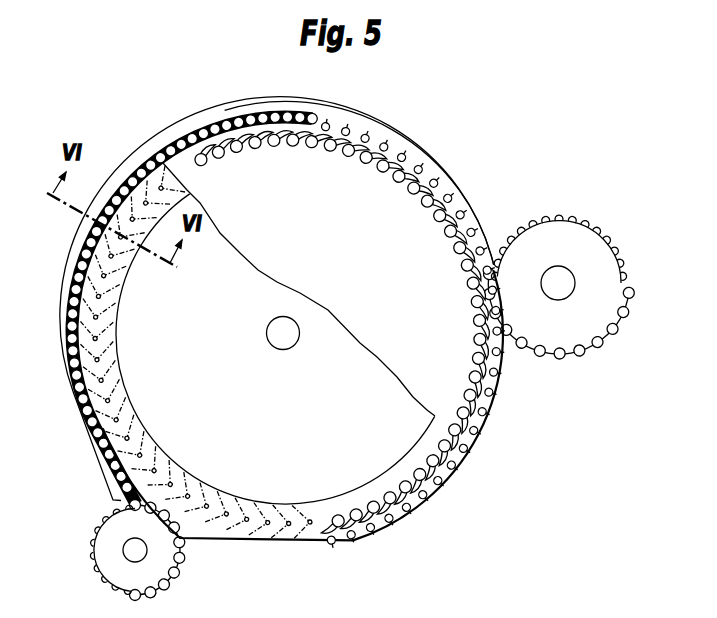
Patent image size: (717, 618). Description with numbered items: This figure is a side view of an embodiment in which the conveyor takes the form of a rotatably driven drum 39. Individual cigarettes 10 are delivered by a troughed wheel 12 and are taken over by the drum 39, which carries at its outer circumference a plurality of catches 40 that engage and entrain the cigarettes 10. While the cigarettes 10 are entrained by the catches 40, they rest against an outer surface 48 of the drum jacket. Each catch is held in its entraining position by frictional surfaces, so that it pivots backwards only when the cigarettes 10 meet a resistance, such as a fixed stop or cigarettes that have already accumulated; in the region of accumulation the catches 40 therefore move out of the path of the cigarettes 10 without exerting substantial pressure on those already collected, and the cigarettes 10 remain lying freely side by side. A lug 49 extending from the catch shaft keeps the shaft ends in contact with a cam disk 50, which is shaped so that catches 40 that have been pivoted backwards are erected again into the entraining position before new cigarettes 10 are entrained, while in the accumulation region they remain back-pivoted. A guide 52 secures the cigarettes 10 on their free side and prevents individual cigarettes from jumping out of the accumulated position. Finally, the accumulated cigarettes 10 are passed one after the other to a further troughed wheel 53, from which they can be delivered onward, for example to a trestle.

The cigarettes 10 is at (78, 285).
The troughed wheel 12 is at (583, 227).
The drum 39 is at (303, 158).
The catches 40 is at (458, 452).
The outer surface 48 is at (75, 330).
The lug 49 is at (320, 503).
The cam disk 50 is at (257, 503).
The guide 52 is at (382, 128).
The further troughed wheel 53 is at (107, 563).